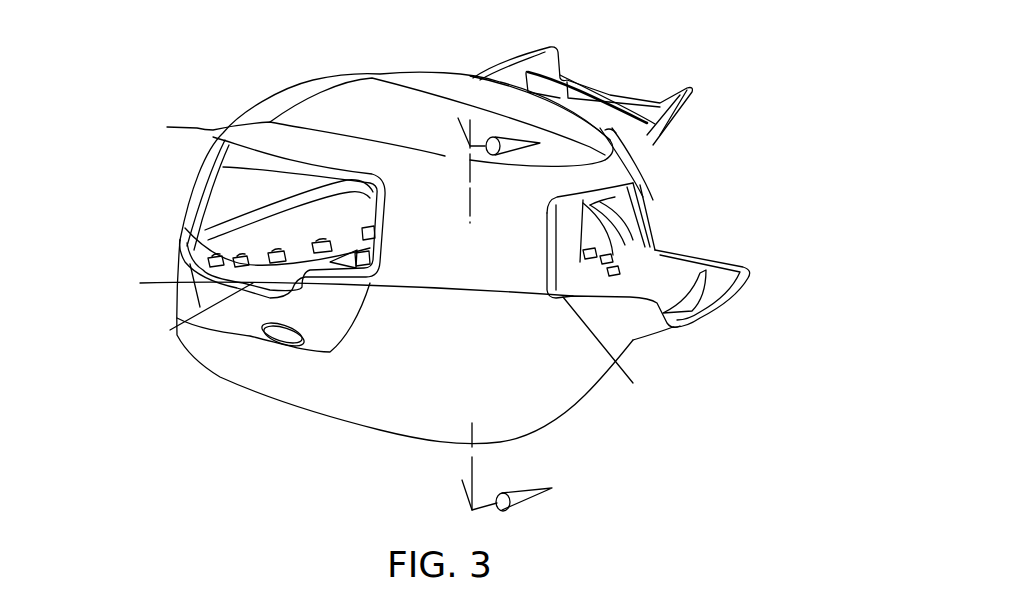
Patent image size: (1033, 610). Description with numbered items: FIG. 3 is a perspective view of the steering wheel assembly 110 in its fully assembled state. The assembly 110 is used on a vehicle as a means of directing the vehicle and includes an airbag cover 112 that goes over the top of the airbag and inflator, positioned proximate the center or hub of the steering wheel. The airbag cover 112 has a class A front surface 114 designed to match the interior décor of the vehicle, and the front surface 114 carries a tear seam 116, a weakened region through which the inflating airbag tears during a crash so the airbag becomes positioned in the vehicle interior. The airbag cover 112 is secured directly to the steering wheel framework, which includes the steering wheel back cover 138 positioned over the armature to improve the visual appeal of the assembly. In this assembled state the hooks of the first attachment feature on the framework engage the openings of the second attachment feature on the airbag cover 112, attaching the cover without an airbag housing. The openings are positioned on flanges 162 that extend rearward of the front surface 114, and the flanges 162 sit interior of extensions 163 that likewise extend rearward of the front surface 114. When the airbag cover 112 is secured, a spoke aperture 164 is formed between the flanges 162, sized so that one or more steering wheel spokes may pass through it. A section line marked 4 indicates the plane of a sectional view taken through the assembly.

The steering wheel assembly 110 is at (667, 213).
The airbag cover 112 is at (443, 226).
The front surface 114 is at (465, 92).
The tear seam 116 is at (403, 93).
The steering wheel back cover 138 is at (630, 345).
The flanges 162 is at (607, 230).
The extensions 163 is at (190, 196).
The spoke aperture 164 is at (170, 330).
The section line 4- 4 is at (499, 322).